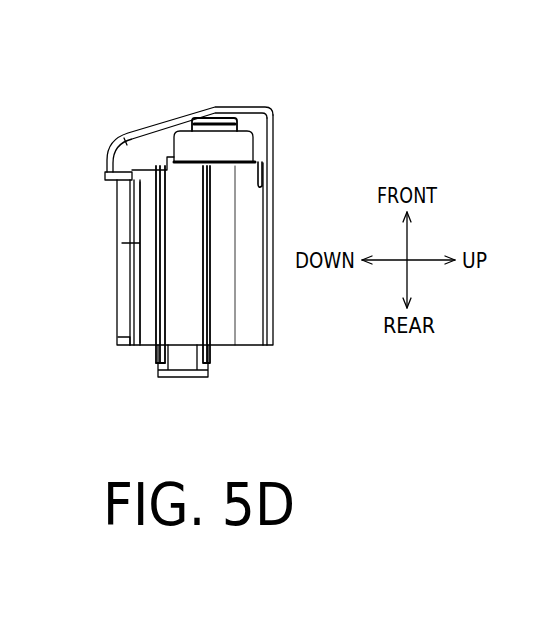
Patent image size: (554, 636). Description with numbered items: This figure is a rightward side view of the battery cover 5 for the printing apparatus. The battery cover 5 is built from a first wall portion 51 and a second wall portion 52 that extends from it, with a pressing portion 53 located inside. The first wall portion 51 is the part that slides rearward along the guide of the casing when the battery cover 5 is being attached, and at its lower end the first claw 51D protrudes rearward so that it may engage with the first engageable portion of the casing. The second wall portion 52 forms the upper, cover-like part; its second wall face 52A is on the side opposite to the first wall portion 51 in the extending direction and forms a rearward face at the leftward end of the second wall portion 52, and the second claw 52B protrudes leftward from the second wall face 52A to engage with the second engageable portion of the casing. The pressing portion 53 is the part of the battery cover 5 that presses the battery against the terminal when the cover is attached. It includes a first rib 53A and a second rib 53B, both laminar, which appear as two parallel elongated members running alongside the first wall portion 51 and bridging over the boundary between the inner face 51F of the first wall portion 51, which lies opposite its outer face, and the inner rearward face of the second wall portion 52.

The battery cover 5 is at (311, 95).
The first wall portion 51 is at (128, 268).
The inner face 51F is at (141, 316).
The first claw 51D is at (182, 362).
The second wall portion 52 is at (150, 140).
The second wall face 52A is at (259, 173).
The second claw 52B is at (210, 118).
The pressing portion 53 is at (222, 259).
The first rib 53A is at (206, 215).
The second rib 53B is at (158, 216).